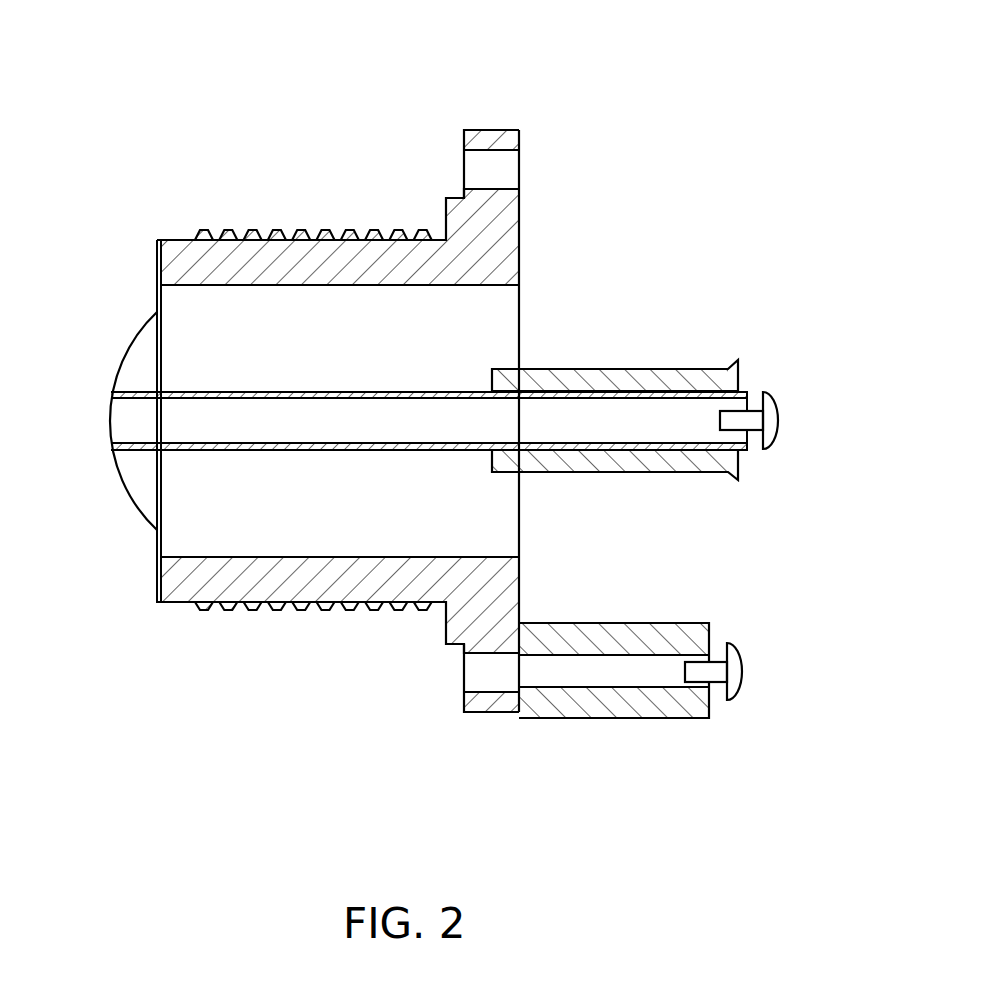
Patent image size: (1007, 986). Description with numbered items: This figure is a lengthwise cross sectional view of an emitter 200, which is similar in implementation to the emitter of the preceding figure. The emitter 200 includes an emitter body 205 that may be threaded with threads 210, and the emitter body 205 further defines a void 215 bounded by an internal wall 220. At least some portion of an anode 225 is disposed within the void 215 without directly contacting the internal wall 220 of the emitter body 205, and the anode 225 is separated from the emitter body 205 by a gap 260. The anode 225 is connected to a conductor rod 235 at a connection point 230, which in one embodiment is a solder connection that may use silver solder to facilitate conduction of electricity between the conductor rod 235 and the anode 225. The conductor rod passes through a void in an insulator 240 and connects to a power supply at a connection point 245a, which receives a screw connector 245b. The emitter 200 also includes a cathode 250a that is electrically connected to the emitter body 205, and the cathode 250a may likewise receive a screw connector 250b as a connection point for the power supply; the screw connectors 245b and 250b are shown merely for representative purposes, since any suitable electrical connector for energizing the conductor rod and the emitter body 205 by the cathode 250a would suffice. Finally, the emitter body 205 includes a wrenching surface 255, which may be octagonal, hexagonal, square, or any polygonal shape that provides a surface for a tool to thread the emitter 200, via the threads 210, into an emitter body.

The emitter 200 is at (96, 26).
The emitter body 205 is at (180, 239).
The threads 210 is at (322, 232).
The void 215 is at (232, 540).
The internal wall 220 is at (220, 283).
The anode 225 is at (137, 335).
The connection point 230 is at (120, 412).
The conductor rod 235 is at (162, 390).
The insulator 240 is at (648, 368).
The connection point 245a is at (753, 407).
The screw connector 245b is at (778, 418).
The cathode 250a is at (663, 718).
The screw connector 250b is at (742, 670).
The wrenching surface 255 is at (497, 131).
The gap 260 is at (157, 541).